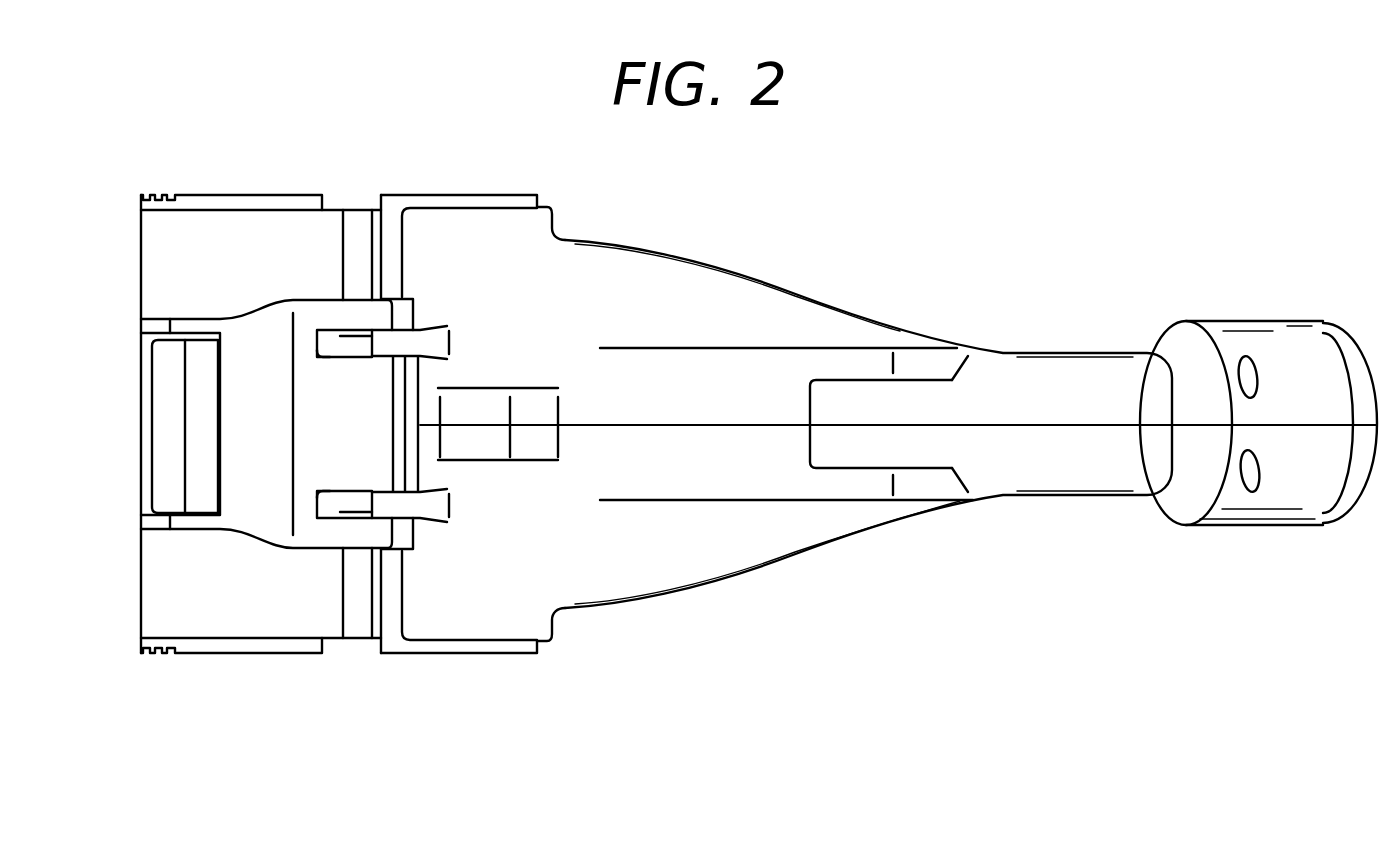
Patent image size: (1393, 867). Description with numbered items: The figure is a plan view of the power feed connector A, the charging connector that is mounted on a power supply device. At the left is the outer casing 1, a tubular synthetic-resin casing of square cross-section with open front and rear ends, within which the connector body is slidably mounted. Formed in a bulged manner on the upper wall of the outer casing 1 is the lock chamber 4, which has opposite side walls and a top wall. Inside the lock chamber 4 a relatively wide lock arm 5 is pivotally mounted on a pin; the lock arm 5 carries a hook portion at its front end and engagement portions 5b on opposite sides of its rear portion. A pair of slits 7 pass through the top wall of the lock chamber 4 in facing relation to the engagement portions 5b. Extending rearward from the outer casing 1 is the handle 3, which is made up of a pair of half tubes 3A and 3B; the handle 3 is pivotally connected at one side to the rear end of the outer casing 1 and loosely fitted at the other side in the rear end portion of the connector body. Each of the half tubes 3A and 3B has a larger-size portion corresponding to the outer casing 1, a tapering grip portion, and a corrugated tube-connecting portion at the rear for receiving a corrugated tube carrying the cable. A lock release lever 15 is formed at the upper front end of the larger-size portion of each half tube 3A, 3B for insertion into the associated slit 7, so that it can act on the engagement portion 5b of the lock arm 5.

The outer casing 1 is at (247, 612).
The handle 3 is at (893, 523).
The half tube 3A is at (780, 305).
The half tube 3B is at (790, 530).
The lock chamber 4 is at (262, 316).
The lock arm 5 is at (165, 383).
The engagement portion 5b is at (353, 343).
The slit 7 is at (314, 350).
The lock release lever 15 is at (432, 330).
The power feed connector A is at (912, 262).